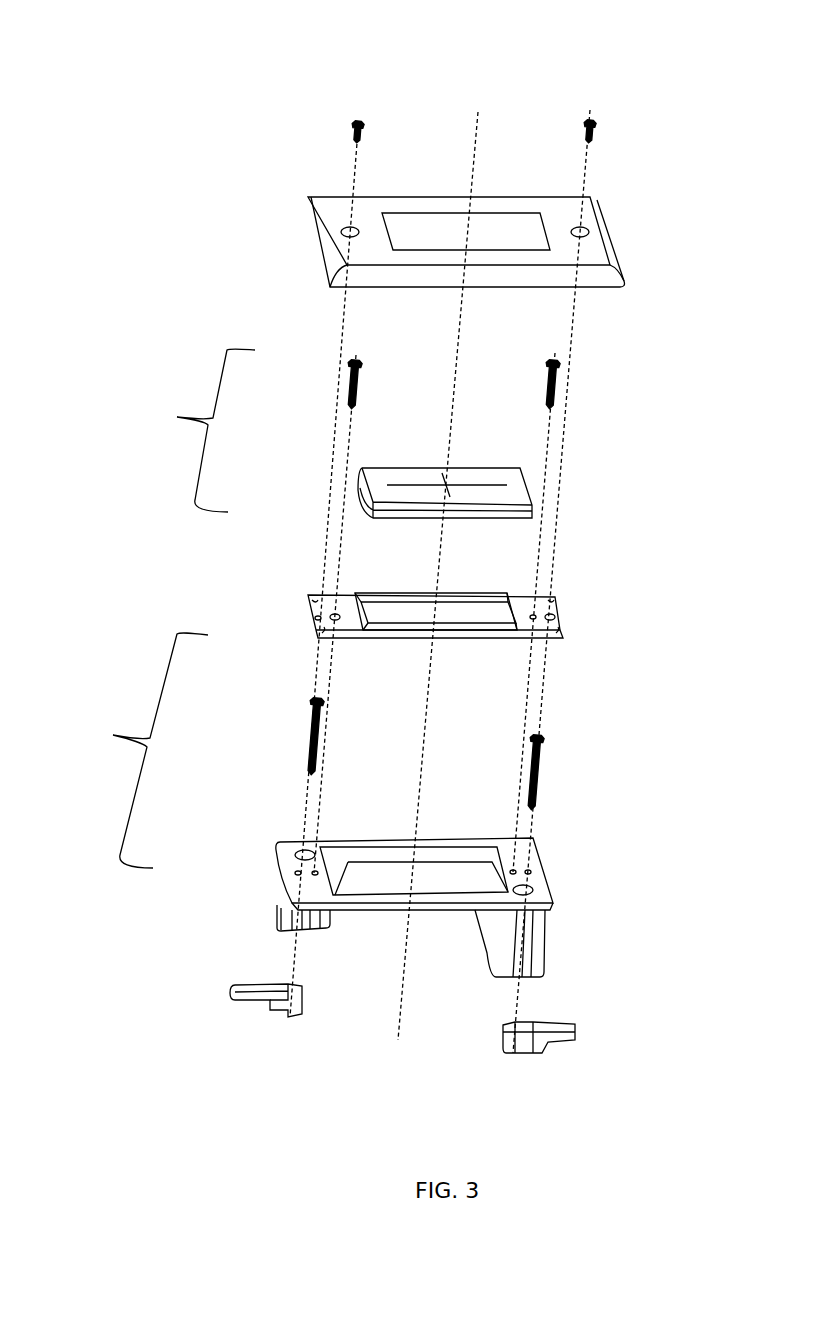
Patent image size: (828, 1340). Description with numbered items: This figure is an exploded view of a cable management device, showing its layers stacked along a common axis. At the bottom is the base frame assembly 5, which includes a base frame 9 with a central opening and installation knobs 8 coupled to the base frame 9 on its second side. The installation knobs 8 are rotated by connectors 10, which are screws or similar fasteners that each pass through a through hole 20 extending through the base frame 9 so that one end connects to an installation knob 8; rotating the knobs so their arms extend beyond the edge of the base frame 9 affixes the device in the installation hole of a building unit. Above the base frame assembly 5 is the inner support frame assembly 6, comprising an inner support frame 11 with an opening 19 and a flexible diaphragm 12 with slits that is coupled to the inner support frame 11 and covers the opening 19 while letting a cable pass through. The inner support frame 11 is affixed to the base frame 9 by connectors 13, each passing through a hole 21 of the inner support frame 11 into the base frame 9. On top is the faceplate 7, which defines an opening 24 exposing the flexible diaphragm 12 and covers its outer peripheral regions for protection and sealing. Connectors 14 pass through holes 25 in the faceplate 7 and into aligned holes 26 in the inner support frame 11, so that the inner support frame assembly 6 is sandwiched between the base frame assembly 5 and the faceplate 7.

The base frame assembly 5 is at (343, 902).
The inner support frame assembly 6 is at (383, 449).
The faceplate 7 is at (432, 206).
The installation knob 8 is at (243, 987).
The base frame 9 is at (374, 854).
The connector 10 is at (308, 743).
The inner support frame 11 is at (409, 575).
The flexible diaphragm 12 is at (360, 477).
The connector 13 is at (348, 366).
The connector 14 is at (355, 124).
The opening 19 is at (460, 600).
The through hole 20 is at (310, 852).
The hole 21 is at (343, 598).
The opening 24 is at (478, 230).
The hole 25 is at (585, 233).
The hole 26 is at (557, 600).